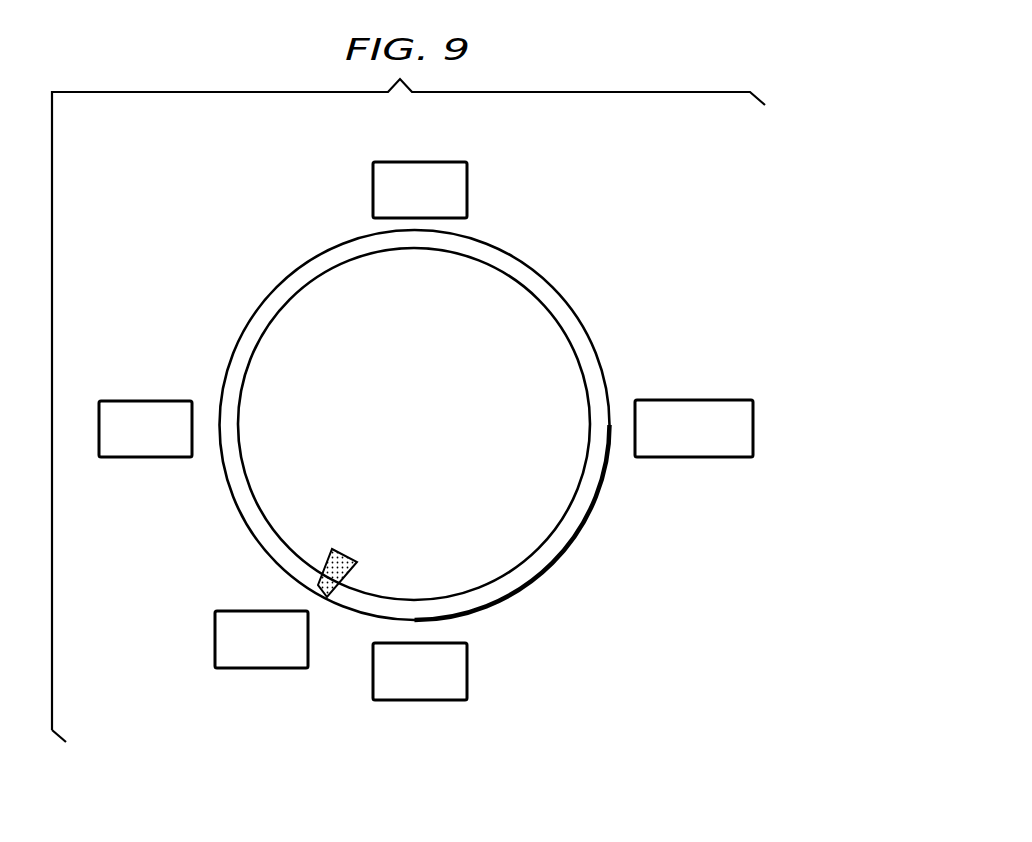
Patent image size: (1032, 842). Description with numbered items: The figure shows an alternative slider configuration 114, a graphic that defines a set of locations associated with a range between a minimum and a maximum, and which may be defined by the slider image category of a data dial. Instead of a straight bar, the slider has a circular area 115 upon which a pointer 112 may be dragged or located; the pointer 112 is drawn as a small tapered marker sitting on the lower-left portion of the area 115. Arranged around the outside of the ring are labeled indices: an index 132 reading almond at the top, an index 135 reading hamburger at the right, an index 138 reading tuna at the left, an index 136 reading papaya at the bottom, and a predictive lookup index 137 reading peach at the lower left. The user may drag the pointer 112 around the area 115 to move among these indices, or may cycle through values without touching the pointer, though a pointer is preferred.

The alternative slider configuration 114 is at (598, 227).
The area 115 is at (565, 547).
The pointer 112 is at (350, 552).
The index 132 is at (418, 162).
The index 135 is at (688, 400).
The index 138 is at (142, 401).
The predictive lookup index 137 is at (215, 632).
The index 136 is at (413, 700).